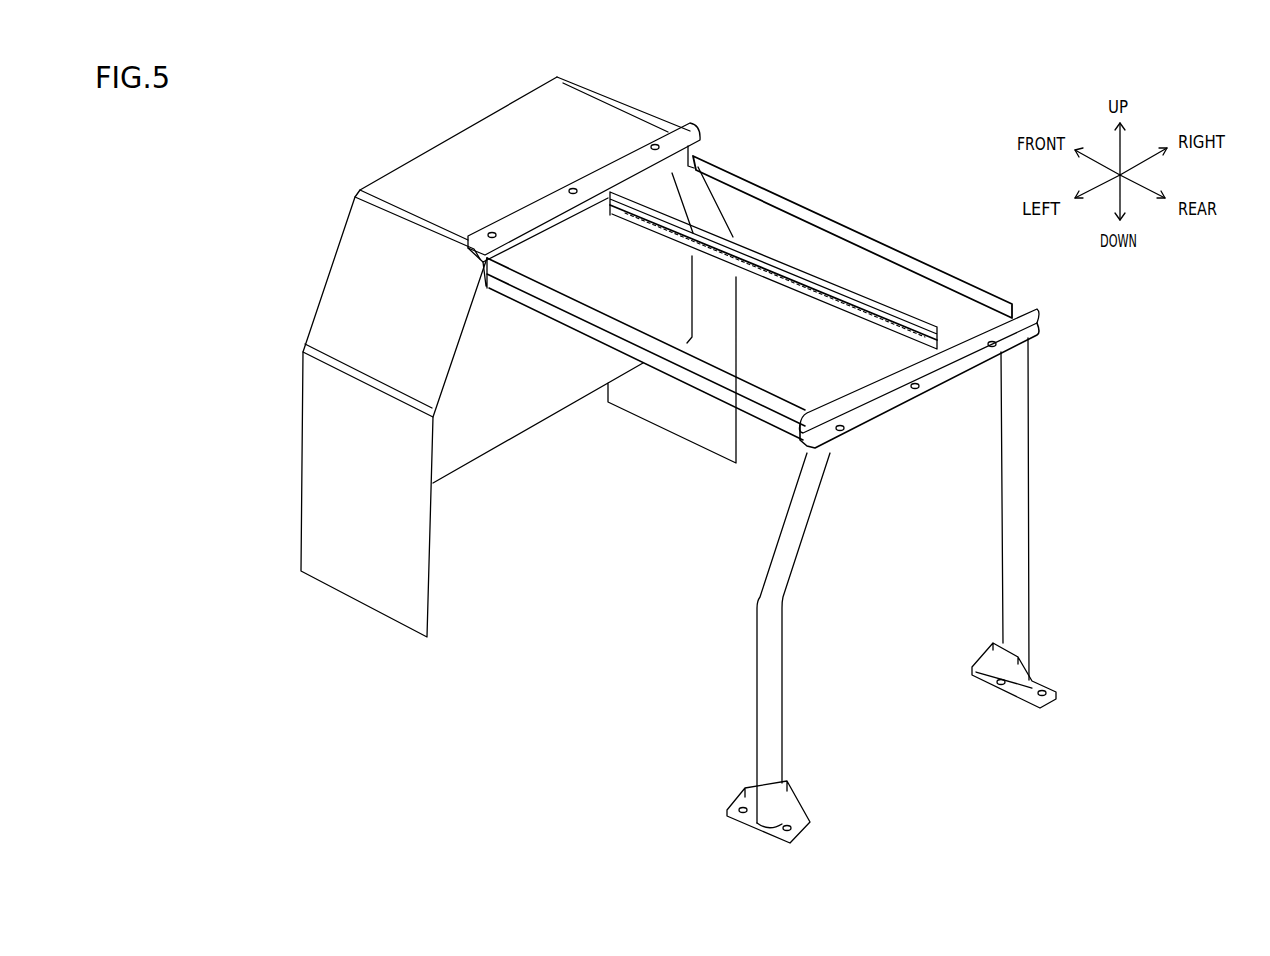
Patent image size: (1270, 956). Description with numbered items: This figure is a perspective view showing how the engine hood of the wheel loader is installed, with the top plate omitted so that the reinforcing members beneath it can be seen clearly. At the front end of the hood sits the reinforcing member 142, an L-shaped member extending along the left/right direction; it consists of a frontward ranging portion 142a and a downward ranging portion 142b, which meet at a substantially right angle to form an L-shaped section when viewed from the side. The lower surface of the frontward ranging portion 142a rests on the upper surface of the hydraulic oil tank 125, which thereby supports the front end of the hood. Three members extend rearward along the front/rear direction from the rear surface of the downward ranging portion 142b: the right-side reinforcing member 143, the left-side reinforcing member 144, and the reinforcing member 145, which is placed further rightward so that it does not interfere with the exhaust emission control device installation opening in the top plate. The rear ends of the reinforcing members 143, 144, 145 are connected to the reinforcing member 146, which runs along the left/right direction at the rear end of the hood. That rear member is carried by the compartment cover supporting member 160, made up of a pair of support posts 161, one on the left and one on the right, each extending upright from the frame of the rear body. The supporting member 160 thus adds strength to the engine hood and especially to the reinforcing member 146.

The hydraulic oil tank 125 is at (352, 277).
The reinforcing member 142 is at (669, 166).
The frontward ranging portion 142a is at (672, 140).
The downward ranging portion 142b is at (673, 165).
The reinforcing member 143 is at (817, 223).
The reinforcing member 144 is at (688, 378).
The reinforcing member 145 is at (861, 310).
The reinforcing member 146 is at (1013, 330).
The compartment cover supporting member 160 is at (906, 590).
The support post 161 is at (1013, 603).